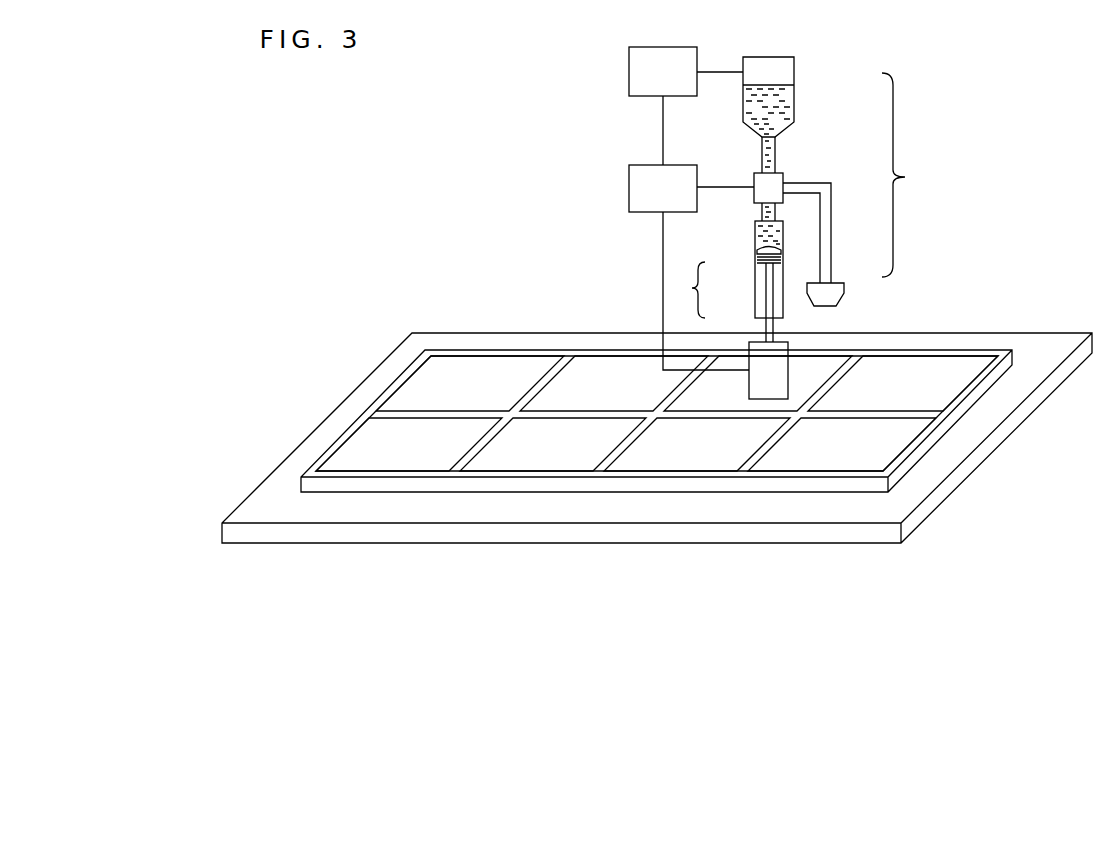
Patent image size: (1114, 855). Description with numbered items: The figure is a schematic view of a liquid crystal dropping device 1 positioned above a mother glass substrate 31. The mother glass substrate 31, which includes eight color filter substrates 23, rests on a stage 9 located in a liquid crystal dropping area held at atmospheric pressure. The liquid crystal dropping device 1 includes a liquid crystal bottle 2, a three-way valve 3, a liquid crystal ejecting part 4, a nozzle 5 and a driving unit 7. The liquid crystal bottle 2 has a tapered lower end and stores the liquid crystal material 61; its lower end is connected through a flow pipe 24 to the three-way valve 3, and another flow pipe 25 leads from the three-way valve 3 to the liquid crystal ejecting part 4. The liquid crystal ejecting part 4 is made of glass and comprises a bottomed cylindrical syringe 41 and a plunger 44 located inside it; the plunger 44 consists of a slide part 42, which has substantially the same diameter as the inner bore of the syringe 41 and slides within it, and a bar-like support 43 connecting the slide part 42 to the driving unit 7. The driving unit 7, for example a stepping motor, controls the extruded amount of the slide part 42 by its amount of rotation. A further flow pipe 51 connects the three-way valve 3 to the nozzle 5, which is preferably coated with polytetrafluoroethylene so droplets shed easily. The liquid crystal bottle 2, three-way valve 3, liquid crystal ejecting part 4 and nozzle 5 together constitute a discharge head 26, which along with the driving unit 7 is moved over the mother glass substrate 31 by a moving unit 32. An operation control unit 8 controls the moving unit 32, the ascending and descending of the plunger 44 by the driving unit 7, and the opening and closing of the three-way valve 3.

The liquid crystal dropping device 1 is at (814, 51).
The liquid crystal bottle 2 is at (802, 97).
The three-way valve 3 is at (784, 174).
The liquid crystal ejecting part 4 is at (736, 279).
The nozzle 5 is at (844, 283).
The driving unit 7 is at (763, 390).
The operation control unit 8 is at (672, 165).
The stage 9 is at (828, 513).
The color filter substrate 23 is at (410, 460).
The flow pipe 24 is at (776, 146).
The flow pipe 25 is at (762, 211).
The discharge head 26 is at (914, 175).
The mother glass substrate 31 is at (548, 473).
The moving unit 32 is at (657, 47).
The syringe 41 is at (755, 224).
The slide part 42 is at (755, 260).
The support 43 is at (766, 323).
The plunger 44 is at (683, 290).
The flow pipe 51 is at (832, 210).
The liquid crystal material 61 is at (790, 93).